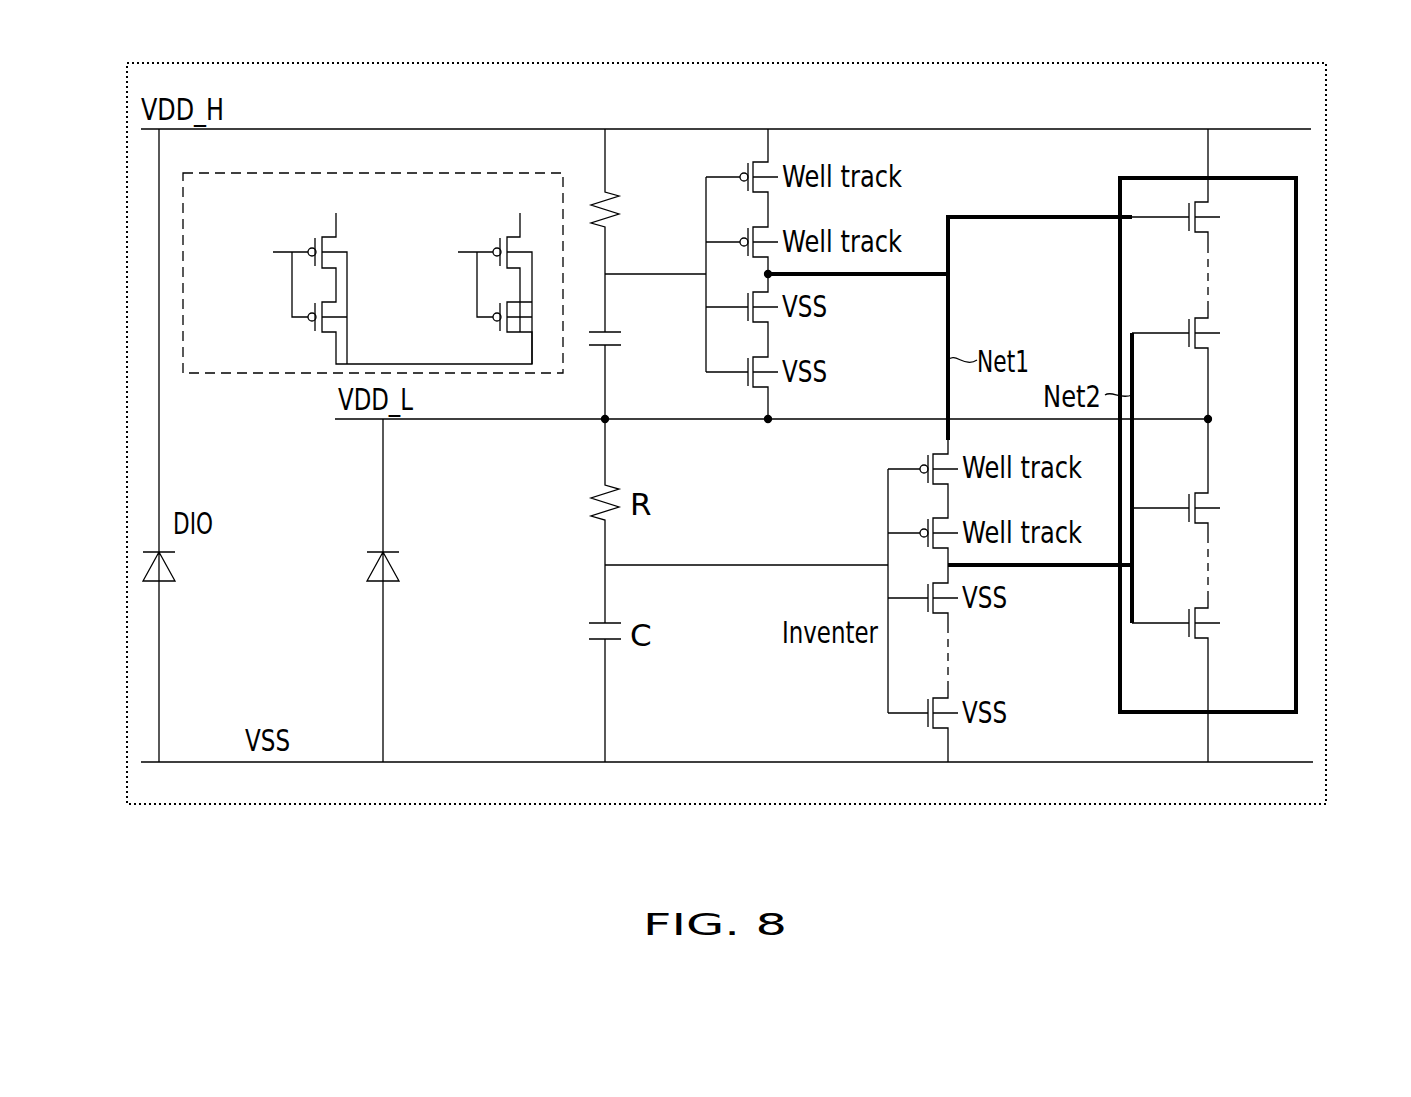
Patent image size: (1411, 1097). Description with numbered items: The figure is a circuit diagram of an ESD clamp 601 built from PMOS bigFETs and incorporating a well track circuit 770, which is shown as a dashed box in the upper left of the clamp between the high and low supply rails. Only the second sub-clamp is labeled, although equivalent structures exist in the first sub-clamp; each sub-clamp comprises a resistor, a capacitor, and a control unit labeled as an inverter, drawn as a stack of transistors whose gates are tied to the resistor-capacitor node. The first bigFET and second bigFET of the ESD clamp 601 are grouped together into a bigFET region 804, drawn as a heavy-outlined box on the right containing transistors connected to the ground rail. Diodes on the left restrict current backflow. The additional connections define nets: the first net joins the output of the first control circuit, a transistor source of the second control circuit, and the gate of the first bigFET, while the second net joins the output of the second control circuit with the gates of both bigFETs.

The well track circuit 770 is at (183, 340).
The bigFET region 804 is at (1296, 358).
The ESD clamp 601 is at (1327, 432).